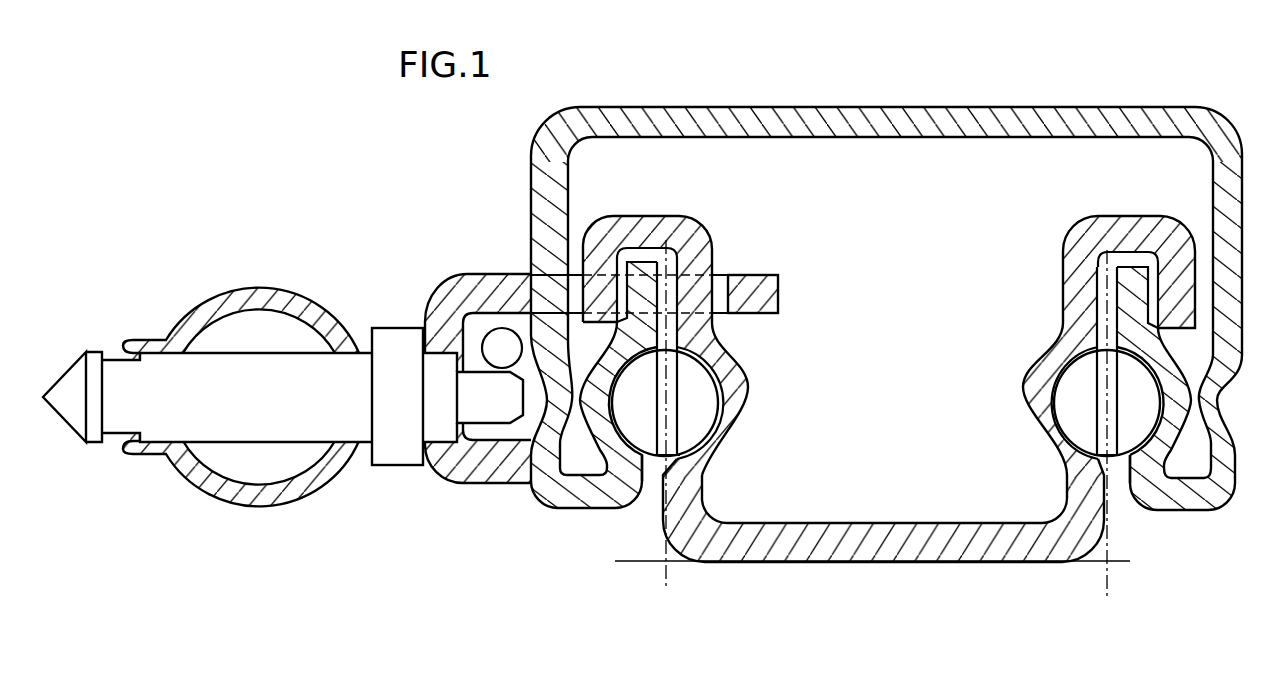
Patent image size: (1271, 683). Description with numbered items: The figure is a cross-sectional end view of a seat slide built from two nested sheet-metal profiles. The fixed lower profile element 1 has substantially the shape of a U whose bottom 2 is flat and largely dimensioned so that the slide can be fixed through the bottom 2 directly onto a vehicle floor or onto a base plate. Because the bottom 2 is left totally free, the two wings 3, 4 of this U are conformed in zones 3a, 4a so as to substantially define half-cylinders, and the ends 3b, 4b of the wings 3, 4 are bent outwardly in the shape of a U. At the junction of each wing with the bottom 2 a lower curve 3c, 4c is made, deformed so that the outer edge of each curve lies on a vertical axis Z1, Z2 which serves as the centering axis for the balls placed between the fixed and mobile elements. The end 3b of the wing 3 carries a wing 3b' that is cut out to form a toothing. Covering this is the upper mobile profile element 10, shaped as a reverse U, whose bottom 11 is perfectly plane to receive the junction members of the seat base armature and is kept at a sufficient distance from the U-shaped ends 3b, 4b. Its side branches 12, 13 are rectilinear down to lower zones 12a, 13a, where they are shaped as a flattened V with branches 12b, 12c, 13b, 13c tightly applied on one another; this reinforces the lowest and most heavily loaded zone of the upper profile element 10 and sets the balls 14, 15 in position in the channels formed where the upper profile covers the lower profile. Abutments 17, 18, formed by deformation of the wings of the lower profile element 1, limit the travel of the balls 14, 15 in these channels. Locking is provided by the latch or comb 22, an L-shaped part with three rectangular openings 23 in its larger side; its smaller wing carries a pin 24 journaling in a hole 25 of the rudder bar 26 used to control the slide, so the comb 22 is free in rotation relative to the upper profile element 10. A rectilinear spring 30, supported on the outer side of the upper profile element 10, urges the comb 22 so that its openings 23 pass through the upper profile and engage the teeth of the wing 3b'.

The fixed lower profile element 1 is at (846, 530).
The bottom 2 is at (905, 560).
The wing 3 is at (752, 368).
The zone 3a is at (752, 408).
The end 3b is at (661, 252).
The wing 3b' is at (600, 249).
The lower curve 3c is at (692, 508).
The wing 4 is at (1017, 356).
The zone 4a is at (1027, 400).
The end 4b is at (1082, 240).
The lower curve 4c is at (1082, 512).
The upper mobile profile element 10 is at (1003, 122).
The bottom 11 is at (786, 107).
The side branch 12 is at (530, 226).
The lower zone 12a is at (545, 339).
The branch 12b is at (535, 400).
The branch 12c is at (600, 412).
The side branch 13 is at (1225, 215).
The lower zone 13a is at (1228, 358).
The branch 13b is at (1205, 425).
The branch 13c is at (1180, 405).
The ball 14 is at (657, 458).
The ball 15 is at (1107, 460).
The abutment 17 is at (630, 468).
The abutment 18 is at (700, 418).
The latch or comb 22 is at (468, 270).
The rectangular openings 23 is at (728, 278).
The pin 24 is at (172, 368).
The hole 25 is at (345, 330).
The rudder bar 26 is at (292, 305).
The spring 30 is at (501, 328).
The vertical axis Z1 is at (664, 432).
The vertical axis Z2 is at (1110, 440).